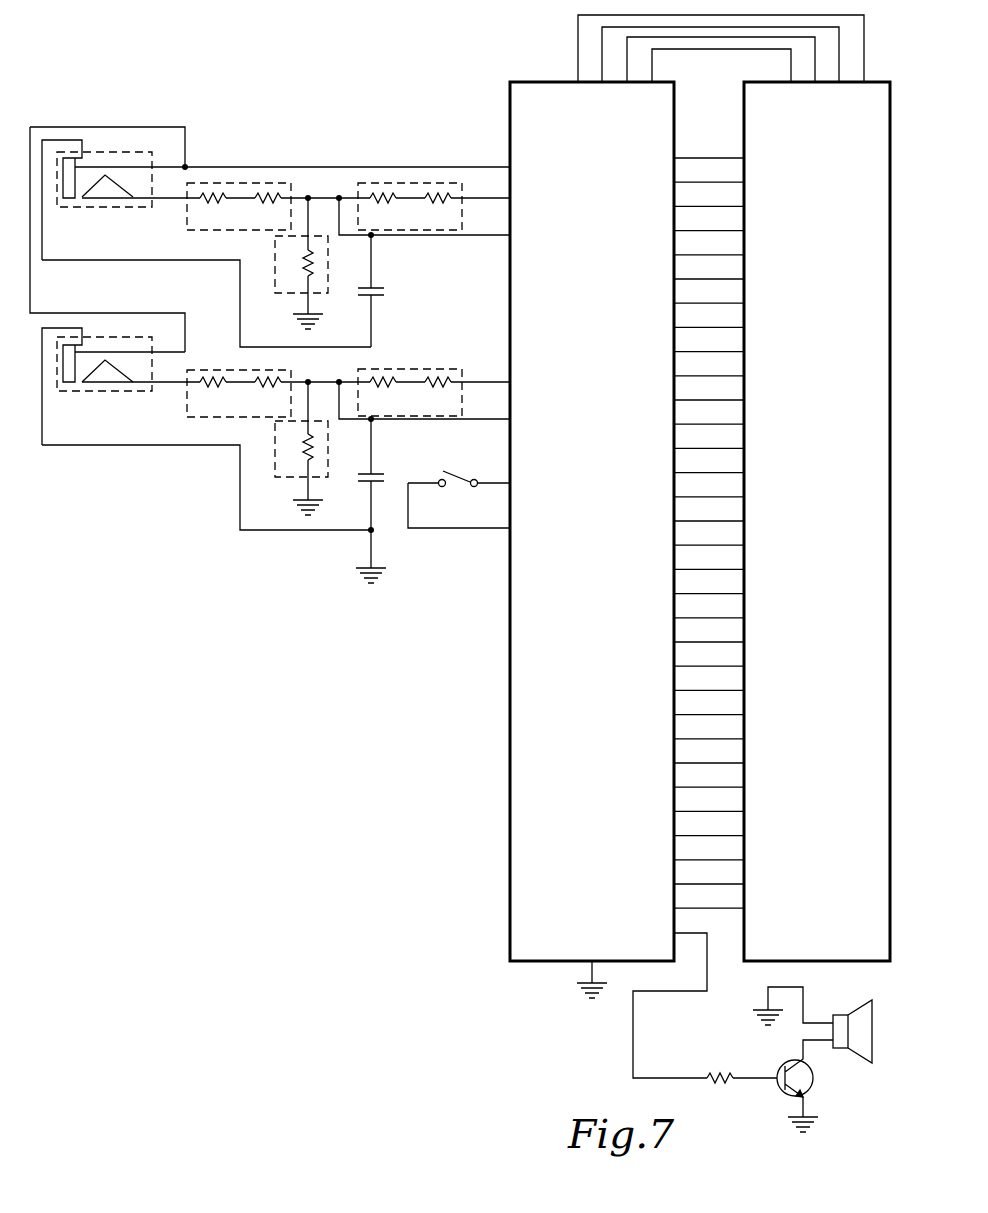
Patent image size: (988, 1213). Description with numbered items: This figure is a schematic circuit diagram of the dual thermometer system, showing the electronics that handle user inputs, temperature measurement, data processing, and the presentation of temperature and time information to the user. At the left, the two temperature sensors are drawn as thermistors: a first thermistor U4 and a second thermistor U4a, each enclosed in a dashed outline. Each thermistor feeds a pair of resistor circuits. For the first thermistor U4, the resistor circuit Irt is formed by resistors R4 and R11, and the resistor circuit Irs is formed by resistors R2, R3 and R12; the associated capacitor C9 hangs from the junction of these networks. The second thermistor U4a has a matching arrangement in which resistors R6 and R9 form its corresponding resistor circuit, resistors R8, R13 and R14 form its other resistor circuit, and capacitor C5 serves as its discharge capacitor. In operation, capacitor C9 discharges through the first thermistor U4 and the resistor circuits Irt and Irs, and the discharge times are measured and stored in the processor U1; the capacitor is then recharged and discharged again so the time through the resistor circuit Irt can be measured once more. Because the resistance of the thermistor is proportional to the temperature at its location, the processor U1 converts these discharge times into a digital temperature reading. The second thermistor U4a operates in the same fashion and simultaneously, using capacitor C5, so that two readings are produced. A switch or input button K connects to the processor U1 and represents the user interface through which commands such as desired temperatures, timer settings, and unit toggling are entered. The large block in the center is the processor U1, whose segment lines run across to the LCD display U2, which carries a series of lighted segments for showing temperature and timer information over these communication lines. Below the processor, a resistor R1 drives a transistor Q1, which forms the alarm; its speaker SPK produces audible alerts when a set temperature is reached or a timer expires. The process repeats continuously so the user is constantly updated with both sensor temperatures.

The first thermistor U4 is at (97, 200).
The second thermistor U4a is at (97, 386).
The resistor circuit lrt Irt is at (241, 183).
The resistor circuit lrs Irs is at (408, 183).
The resistor R4 is at (213, 211).
The resistor R11 is at (271, 211).
The resistor R2 is at (301, 263).
The resistor R12 is at (379, 211).
The resistor R3 is at (438, 211).
The capacitor C9 is at (364, 291).
The resistor R6 is at (213, 397).
The resistor R9 is at (268, 397).
The resistor R8 is at (301, 448).
The resistor R14 is at (379, 396).
The resistor R13 is at (442, 396).
The capacitor C5 is at (365, 501).
The input button K is at (459, 488).
The processor U1 is at (687, 506).
The LCD display U2 is at (817, 521).
The resistor R1 is at (720, 1065).
The alarm Q1 is at (794, 1086).
The speaker SPK is at (812, 1039).